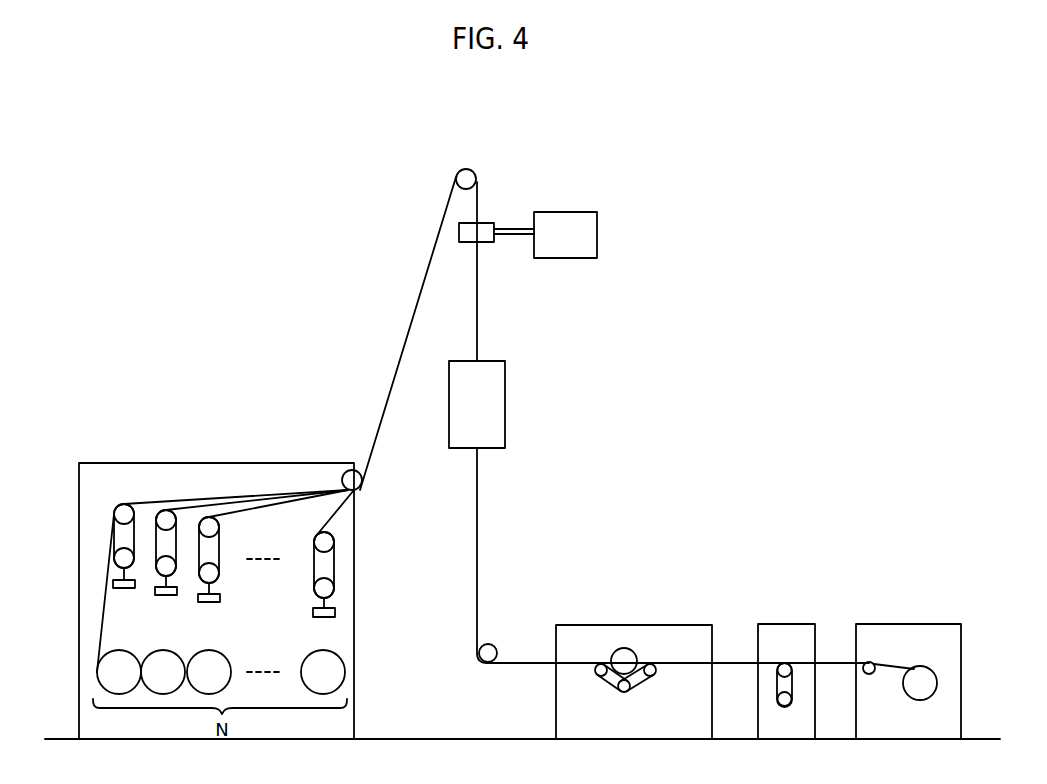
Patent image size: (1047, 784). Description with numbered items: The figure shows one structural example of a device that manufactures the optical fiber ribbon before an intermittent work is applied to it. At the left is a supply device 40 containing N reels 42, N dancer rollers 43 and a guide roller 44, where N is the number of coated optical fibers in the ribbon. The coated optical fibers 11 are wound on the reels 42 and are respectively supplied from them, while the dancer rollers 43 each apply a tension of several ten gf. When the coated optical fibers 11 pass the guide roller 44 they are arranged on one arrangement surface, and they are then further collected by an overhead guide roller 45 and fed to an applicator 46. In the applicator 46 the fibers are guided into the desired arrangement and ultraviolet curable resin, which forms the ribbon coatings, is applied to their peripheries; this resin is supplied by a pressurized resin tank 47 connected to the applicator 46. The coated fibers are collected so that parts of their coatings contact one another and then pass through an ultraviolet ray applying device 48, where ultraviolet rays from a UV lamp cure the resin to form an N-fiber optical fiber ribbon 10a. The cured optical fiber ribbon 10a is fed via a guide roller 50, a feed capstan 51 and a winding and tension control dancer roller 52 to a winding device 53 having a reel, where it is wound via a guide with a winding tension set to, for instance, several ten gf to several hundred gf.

The supply device 40 is at (238, 463).
The guide roller 44 is at (347, 472).
The coated optical fibers 11 is at (107, 585).
The dancer rollers 43 is at (330, 540).
The reels 42 is at (103, 680).
The overhead guide roller 45 is at (470, 168).
The applicator 46 is at (485, 223).
The pressurized resin tank 47 is at (578, 212).
The ultraviolet ray applying device 48 is at (506, 378).
The optical fiber ribbon 10a is at (478, 527).
The guide roller 50 is at (495, 645).
The feed capstan 51 is at (640, 625).
The winding and tension control dancer roller 52 is at (787, 624).
The winding device 53 is at (927, 624).